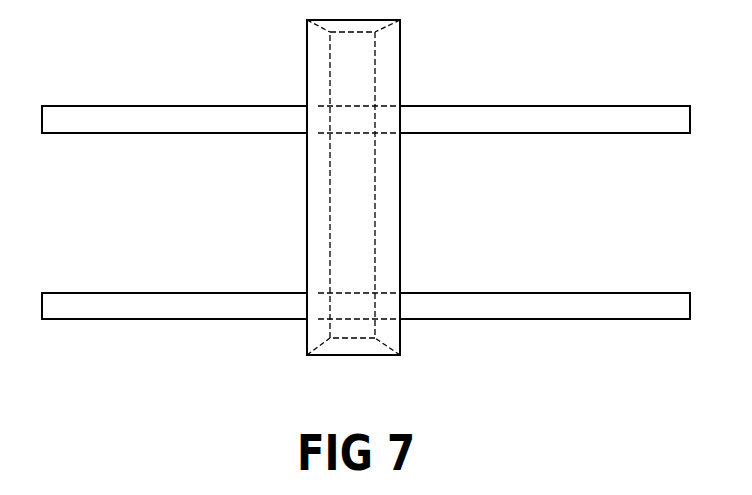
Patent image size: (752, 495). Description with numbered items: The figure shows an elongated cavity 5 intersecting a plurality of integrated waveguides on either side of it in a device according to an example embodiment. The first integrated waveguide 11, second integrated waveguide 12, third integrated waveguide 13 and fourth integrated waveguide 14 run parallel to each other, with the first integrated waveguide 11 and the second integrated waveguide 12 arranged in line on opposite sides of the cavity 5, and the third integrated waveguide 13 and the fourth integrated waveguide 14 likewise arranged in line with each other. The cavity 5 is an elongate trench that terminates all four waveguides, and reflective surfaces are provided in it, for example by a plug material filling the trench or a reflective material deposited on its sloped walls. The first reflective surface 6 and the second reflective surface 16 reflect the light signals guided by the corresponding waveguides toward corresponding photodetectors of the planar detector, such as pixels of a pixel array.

The cavity 5 is at (400, 258).
The first reflective surface 6 is at (307, 283).
The second reflective surface 16 is at (400, 282).
The first integrated waveguide 11 is at (135, 296).
The second integrated waveguide 12 is at (585, 293).
The third integrated waveguide 13 is at (188, 103).
The fourth integrated waveguide 14 is at (595, 105).